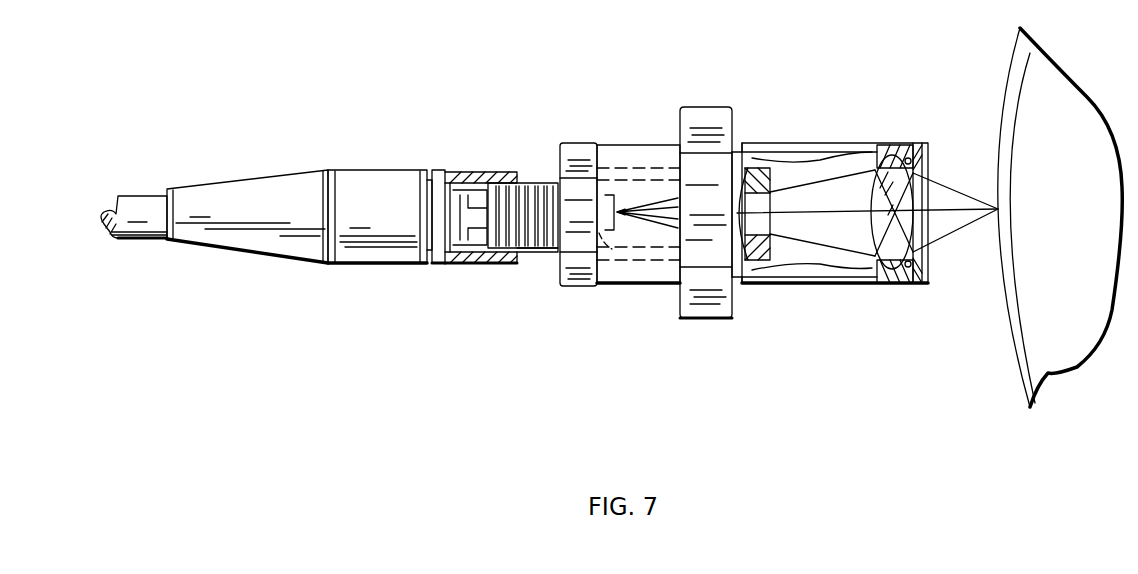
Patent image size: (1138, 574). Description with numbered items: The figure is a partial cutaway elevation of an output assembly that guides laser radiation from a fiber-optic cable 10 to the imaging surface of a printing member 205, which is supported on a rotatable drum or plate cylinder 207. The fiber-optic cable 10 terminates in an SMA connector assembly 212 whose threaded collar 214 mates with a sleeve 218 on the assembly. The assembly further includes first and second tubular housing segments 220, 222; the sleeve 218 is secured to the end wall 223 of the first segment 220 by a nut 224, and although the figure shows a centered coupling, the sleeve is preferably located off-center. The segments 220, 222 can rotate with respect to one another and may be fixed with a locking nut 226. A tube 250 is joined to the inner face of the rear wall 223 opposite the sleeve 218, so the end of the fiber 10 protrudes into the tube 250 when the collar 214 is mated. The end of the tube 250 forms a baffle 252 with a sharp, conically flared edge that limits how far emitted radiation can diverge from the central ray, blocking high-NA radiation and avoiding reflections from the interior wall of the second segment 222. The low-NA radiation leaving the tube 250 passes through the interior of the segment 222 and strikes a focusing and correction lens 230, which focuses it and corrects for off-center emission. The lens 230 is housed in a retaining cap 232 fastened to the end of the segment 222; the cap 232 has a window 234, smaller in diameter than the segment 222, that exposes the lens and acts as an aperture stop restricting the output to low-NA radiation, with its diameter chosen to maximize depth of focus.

The fiber-optic cable 10 is at (605, 287).
The printing member 205 is at (1027, 390).
The plate cylinder 207 is at (1045, 322).
The SMA connector assembly 212 is at (296, 190).
The threaded collar 214 is at (437, 175).
The sleeve 218 is at (540, 170).
The first tubular housing segment 220 is at (650, 76).
The second tubular housing segment 222 is at (798, 283).
The end wall 223 is at (615, 143).
The nut 224 is at (562, 290).
The locking nut 226 is at (708, 318).
The focusing and correction lens 230 is at (900, 268).
The retaining cap 232 is at (908, 277).
The window 234 is at (940, 177).
The tube 250 is at (628, 172).
The baffle 252 is at (754, 170).